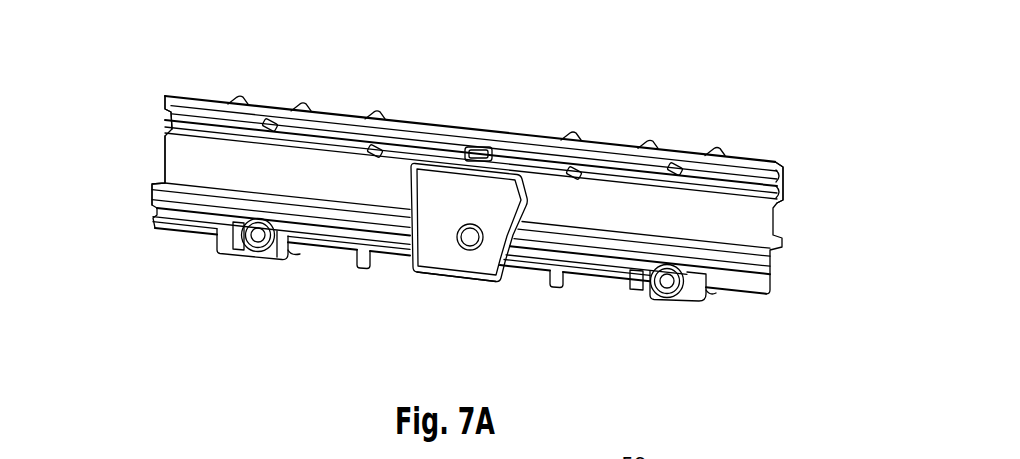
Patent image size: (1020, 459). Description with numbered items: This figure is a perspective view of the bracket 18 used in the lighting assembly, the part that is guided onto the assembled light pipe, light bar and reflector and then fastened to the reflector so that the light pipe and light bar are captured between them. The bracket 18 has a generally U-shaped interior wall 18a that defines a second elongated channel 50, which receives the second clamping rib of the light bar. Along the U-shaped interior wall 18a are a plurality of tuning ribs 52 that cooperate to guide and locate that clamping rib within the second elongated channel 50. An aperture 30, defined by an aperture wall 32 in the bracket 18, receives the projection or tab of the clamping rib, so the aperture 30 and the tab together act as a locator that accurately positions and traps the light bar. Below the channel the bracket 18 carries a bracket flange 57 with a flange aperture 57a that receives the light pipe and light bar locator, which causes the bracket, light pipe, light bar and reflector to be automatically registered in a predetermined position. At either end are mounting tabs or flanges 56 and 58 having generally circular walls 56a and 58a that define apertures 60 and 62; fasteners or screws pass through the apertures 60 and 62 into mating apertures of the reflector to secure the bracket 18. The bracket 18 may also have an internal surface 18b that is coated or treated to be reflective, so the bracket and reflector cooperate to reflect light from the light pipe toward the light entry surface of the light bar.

The bracket 18 is at (765, 144).
The generally U-shaped interior wall 18a is at (197, 100).
The internal surface 18b is at (157, 181).
The aperture 30 is at (485, 236).
The aperture wall 32 is at (466, 146).
The second elongated channel 50 is at (459, 203).
The tuning ribs 52 is at (375, 149).
The mounting tab or flange 56 is at (293, 259).
The generally circular wall 56a is at (251, 247).
The bracket flange 57 is at (427, 278).
The flange aperture 57a is at (466, 275).
The mounting tab or flange 58 is at (703, 298).
The generally circular wall 58a is at (667, 288).
The aperture 60 is at (233, 255).
The aperture 62 is at (642, 295).